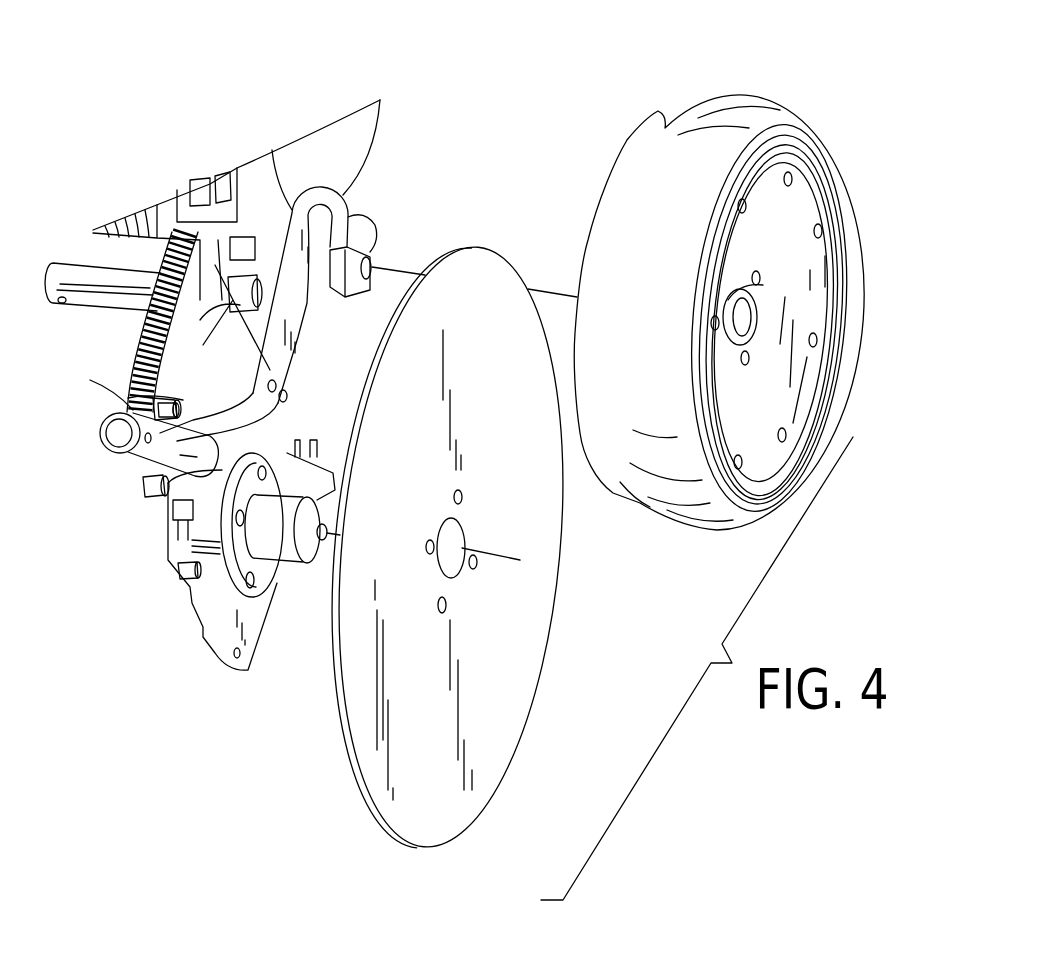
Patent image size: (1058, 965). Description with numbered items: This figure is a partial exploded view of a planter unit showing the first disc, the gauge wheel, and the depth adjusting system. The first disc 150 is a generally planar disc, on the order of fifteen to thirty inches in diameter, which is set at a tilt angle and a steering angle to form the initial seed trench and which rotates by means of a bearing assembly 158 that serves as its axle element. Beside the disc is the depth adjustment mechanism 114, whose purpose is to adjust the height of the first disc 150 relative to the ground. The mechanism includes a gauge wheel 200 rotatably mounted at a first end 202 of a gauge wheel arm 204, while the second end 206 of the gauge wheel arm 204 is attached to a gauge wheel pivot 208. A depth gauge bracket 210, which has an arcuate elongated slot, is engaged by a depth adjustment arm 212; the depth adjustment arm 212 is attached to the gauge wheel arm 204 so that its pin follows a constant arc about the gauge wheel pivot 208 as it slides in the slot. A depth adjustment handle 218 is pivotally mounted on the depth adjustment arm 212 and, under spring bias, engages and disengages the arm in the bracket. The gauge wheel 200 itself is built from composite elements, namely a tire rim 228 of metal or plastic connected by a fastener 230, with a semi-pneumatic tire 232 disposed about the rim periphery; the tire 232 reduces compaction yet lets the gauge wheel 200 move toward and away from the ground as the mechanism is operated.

The depth adjustment mechanism 114 is at (78, 248).
The first disc 150 is at (530, 688).
The bearing assembly 158 is at (283, 555).
The gauge wheel 200 is at (763, 100).
The first end 202 is at (378, 242).
The gauge wheel arm 204 is at (372, 204).
The second end 206 is at (147, 557).
The gauge wheel pivot 208 is at (160, 512).
The depth gauge bracket 210 is at (147, 320).
The depth adjustment arm 212 is at (128, 398).
The depth adjustment handle 218 is at (105, 307).
The tire rim 228 is at (817, 197).
The fastener 230 is at (763, 285).
The semi-pneumatic tire 232 is at (812, 116).